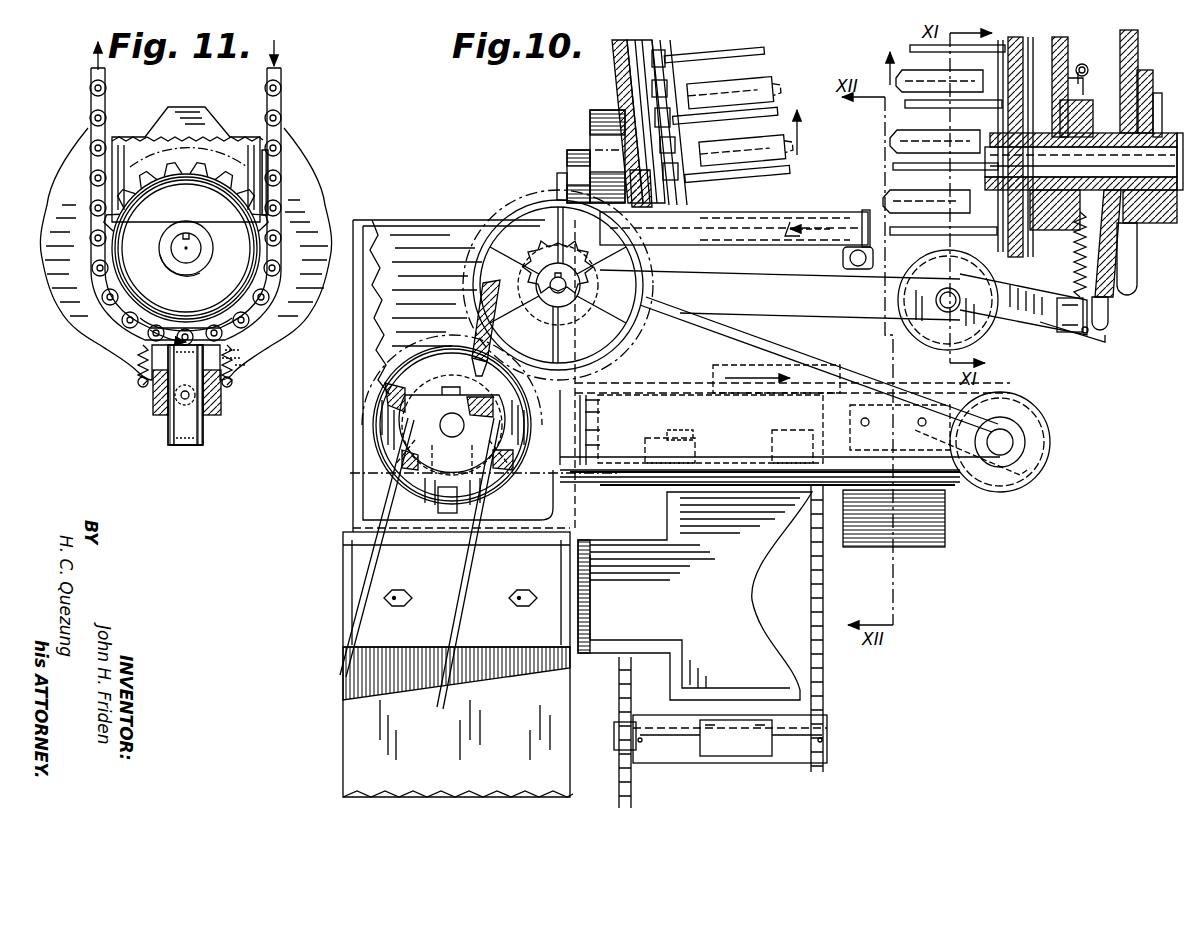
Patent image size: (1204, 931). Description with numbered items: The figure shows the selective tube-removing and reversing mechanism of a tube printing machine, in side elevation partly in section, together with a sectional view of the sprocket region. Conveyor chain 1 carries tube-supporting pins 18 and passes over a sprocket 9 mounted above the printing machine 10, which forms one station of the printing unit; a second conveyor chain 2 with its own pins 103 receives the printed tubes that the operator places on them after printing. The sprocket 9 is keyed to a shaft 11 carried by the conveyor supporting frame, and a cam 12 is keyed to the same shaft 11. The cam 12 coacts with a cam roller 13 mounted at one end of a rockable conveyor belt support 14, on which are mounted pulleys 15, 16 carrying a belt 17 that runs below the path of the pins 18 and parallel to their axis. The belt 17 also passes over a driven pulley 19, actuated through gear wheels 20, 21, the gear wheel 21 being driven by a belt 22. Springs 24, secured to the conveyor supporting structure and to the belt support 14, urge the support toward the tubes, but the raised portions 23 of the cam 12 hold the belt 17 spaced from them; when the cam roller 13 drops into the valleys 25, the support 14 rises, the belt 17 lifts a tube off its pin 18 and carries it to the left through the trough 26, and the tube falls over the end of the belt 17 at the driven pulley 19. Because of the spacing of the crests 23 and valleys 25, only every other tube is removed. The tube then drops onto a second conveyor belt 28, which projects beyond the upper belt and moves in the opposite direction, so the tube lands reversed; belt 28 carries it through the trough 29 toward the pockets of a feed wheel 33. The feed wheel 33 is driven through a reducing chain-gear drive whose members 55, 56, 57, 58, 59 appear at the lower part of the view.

In FIG. 11, the conveyor chain 1 is at (278, 112).
In FIG. 10, the conveyor chain 1 is at (1040, 50).
In FIG. 10, the conveyor chain 2 is at (652, 48).
In FIG. 11, the sprocket 9 is at (262, 224).
In FIG. 10, the sprocket 9 is at (1005, 70).
In FIG. 10, the printing machine 10 is at (676, 508).
In FIG. 11, the shaft 11 is at (189, 248).
In FIG. 10, the shaft 11 is at (1150, 175).
In FIG. 11, the cam 12 is at (270, 170).
In FIG. 10, the cam 12 is at (1105, 298).
In FIG. 11, the cam roller 13 is at (190, 402).
In FIG. 10, the cam roller 13 is at (1110, 320).
In FIG. 11, the rockable conveyor belt support 14 is at (156, 410).
In FIG. 10, the rockable conveyor belt support 14 is at (1075, 338).
In FIG. 11, the pulley 15 is at (170, 430).
In FIG. 10, the pulley 15 is at (985, 330).
In FIG. 10, the pulley 16 is at (843, 258).
In FIG. 11, the belt 17 is at (188, 446).
In FIG. 10, the belt 17 is at (512, 268).
In FIG. 11, the tube-supporting pins 18 is at (280, 88).
In FIG. 10, the tube-supporting pins 18 is at (905, 60).
In FIG. 10, the driven pulley 19 is at (558, 285).
In FIG. 10, the gear wheel 20 is at (530, 190).
In FIG. 10, the gear wheel 21 is at (370, 480).
In FIG. 10, the belt 22 is at (392, 508).
In FIG. 11, the raised portions 23 is at (270, 318).
In FIG. 11, the springs 24 is at (140, 362).
In FIG. 10, the springs 24 is at (1075, 252).
In FIG. 11, the valleys 25 is at (240, 360).
In FIG. 10, the trough 26 is at (765, 225).
In FIG. 10, the second conveyor belt 28 is at (1020, 380).
In FIG. 10, the trough 29 is at (898, 437).
In FIG. 10, the feed wheel 33 is at (930, 505).
In FIG. 10, the reducing chain-gear drive element 55 is at (617, 690).
In FIG. 10, the reducing chain-gear drive element 56 is at (632, 792).
In FIG. 10, the reducing chain-gear drive element 57 is at (830, 755).
In FIG. 10, the reducing chain-gear drive element 58 is at (825, 680).
In FIG. 10, the reducing chain-gear drive element 59 is at (810, 498).
In FIG. 10, the pins 103 is at (770, 52).